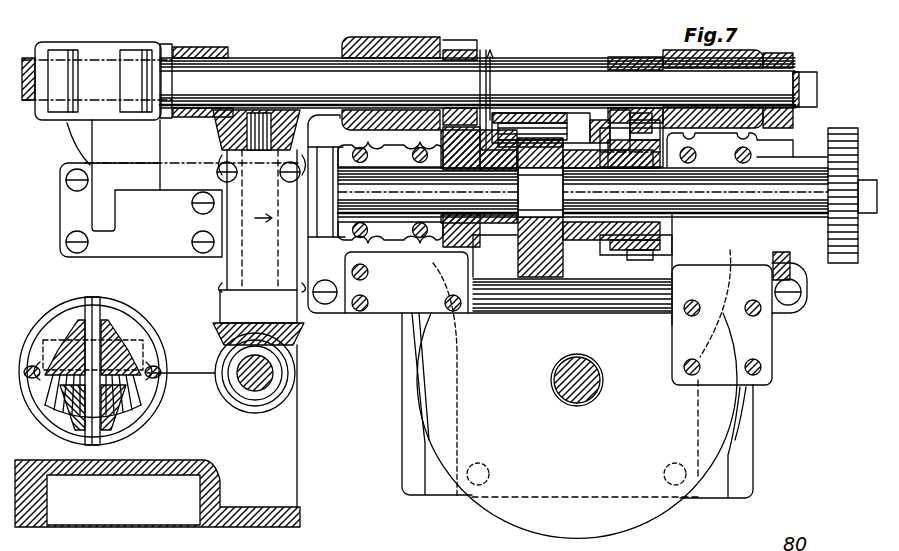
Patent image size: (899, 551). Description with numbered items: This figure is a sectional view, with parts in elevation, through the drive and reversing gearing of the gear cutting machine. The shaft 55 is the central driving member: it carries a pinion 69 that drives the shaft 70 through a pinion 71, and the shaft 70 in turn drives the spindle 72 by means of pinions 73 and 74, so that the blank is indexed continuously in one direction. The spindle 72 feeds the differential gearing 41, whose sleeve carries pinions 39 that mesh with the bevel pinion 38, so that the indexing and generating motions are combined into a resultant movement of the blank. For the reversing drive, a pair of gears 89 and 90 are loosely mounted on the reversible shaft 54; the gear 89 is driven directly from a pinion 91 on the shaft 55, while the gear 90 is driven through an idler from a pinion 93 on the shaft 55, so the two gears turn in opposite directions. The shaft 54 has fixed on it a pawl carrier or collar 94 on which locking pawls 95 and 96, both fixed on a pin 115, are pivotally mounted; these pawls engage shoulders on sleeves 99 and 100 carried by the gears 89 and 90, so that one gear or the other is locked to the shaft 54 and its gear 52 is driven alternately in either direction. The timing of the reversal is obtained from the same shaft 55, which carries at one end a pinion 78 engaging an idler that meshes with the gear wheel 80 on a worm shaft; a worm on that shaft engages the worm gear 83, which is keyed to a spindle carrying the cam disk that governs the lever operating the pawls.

The pinion 69 is at (222, 62).
The pinion 71 is at (235, 135).
The shaft 70 is at (226, 280).
The pinion 73 is at (220, 323).
The spindle 72 is at (295, 373).
The pinion 74 is at (230, 400).
The differential gearing 41 is at (112, 312).
The bevel pinion 38 is at (130, 385).
The pinions 39 is at (122, 422).
The gear 89 is at (453, 238).
The reversible shaft 54 is at (583, 192).
The sleeve 100 is at (500, 226).
The pawl carrier or collar 94 is at (540, 280).
The sleeve 99 is at (592, 240).
The gear 90 is at (641, 258).
The pinion 91 is at (460, 50).
The locking pawl 96 is at (488, 112).
The shaft 55 is at (514, 78).
The pin 115 is at (532, 130).
The locking pawl 95 is at (586, 112).
The pinion 93 is at (640, 58).
The pinion 78 is at (790, 60).
The gear 52 is at (848, 264).
The gear wheel 80 is at (782, 272).
The worm gear 83 is at (577, 425).